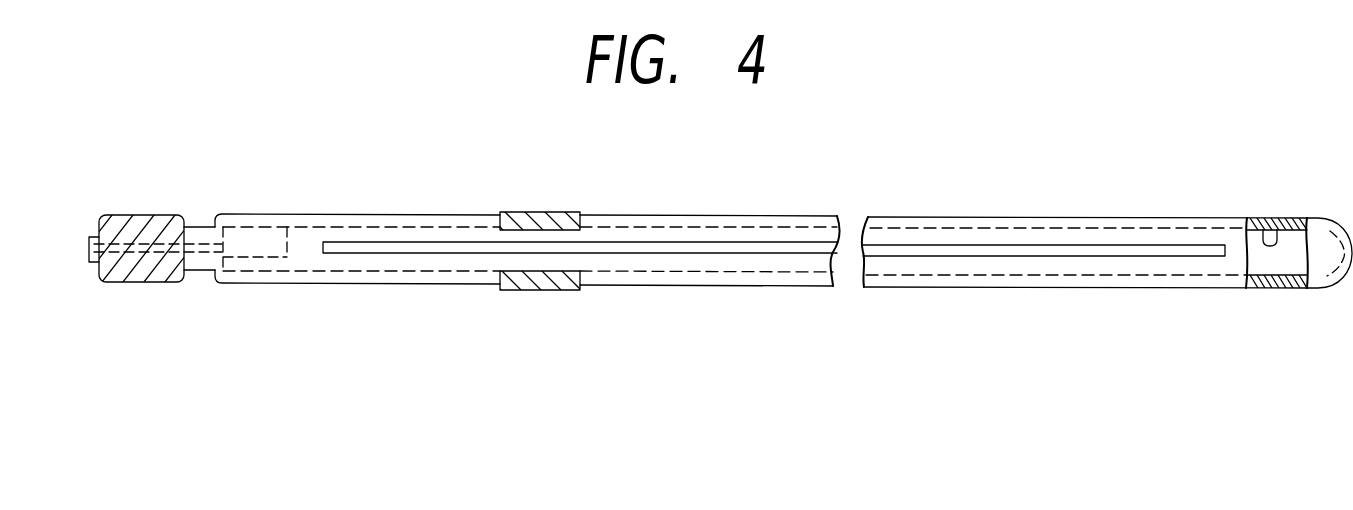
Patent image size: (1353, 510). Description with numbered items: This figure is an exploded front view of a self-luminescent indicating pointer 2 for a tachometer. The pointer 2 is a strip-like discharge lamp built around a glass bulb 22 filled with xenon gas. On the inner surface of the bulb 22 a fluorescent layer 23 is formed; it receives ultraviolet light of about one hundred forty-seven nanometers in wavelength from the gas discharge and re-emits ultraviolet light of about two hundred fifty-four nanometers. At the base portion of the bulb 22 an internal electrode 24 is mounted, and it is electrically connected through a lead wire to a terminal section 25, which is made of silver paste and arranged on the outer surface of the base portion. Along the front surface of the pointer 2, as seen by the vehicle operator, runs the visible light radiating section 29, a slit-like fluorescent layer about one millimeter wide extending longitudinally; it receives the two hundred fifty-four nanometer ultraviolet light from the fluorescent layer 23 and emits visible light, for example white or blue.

The self-luminescent indicating pointer 2 is at (601, 203).
The glass bulb 22 is at (1293, 221).
The fluorescent layer 23 is at (1265, 228).
The internal electrode 24 is at (253, 240).
The terminal section 25 is at (137, 228).
The visible light radiating section 29 is at (925, 247).